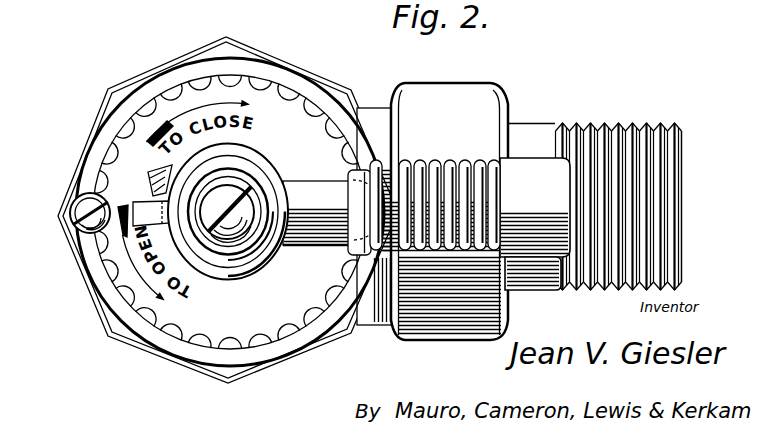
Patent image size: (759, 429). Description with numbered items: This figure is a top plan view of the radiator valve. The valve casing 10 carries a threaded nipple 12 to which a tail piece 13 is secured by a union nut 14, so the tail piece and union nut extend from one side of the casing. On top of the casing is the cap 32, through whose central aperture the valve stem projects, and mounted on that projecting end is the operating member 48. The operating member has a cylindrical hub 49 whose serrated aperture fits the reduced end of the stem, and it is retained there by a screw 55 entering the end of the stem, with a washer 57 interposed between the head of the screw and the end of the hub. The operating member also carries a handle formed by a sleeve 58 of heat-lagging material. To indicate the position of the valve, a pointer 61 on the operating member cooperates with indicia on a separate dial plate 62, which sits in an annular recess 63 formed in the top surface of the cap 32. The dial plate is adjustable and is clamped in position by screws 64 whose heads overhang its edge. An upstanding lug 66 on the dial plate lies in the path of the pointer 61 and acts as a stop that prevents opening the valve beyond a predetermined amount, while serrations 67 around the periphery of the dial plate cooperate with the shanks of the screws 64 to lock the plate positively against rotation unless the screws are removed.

The valve casing 10 is at (300, 62).
The threaded nipple 12 is at (372, 108).
The tail piece 13 is at (532, 135).
The union nut 14 is at (463, 95).
The cap 32 is at (245, 50).
The operating member 48 is at (294, 195).
The cylindrical hub 49 is at (267, 260).
The screw 55 is at (229, 193).
The washer 57 is at (227, 240).
The sleeve 58 is at (455, 162).
The pointer 61 is at (125, 222).
The dial plate 62 is at (157, 307).
The annular recess 63 is at (233, 356).
The screws 64 is at (80, 226).
The upstanding lug 66 is at (150, 178).
The serrations 67 is at (332, 137).